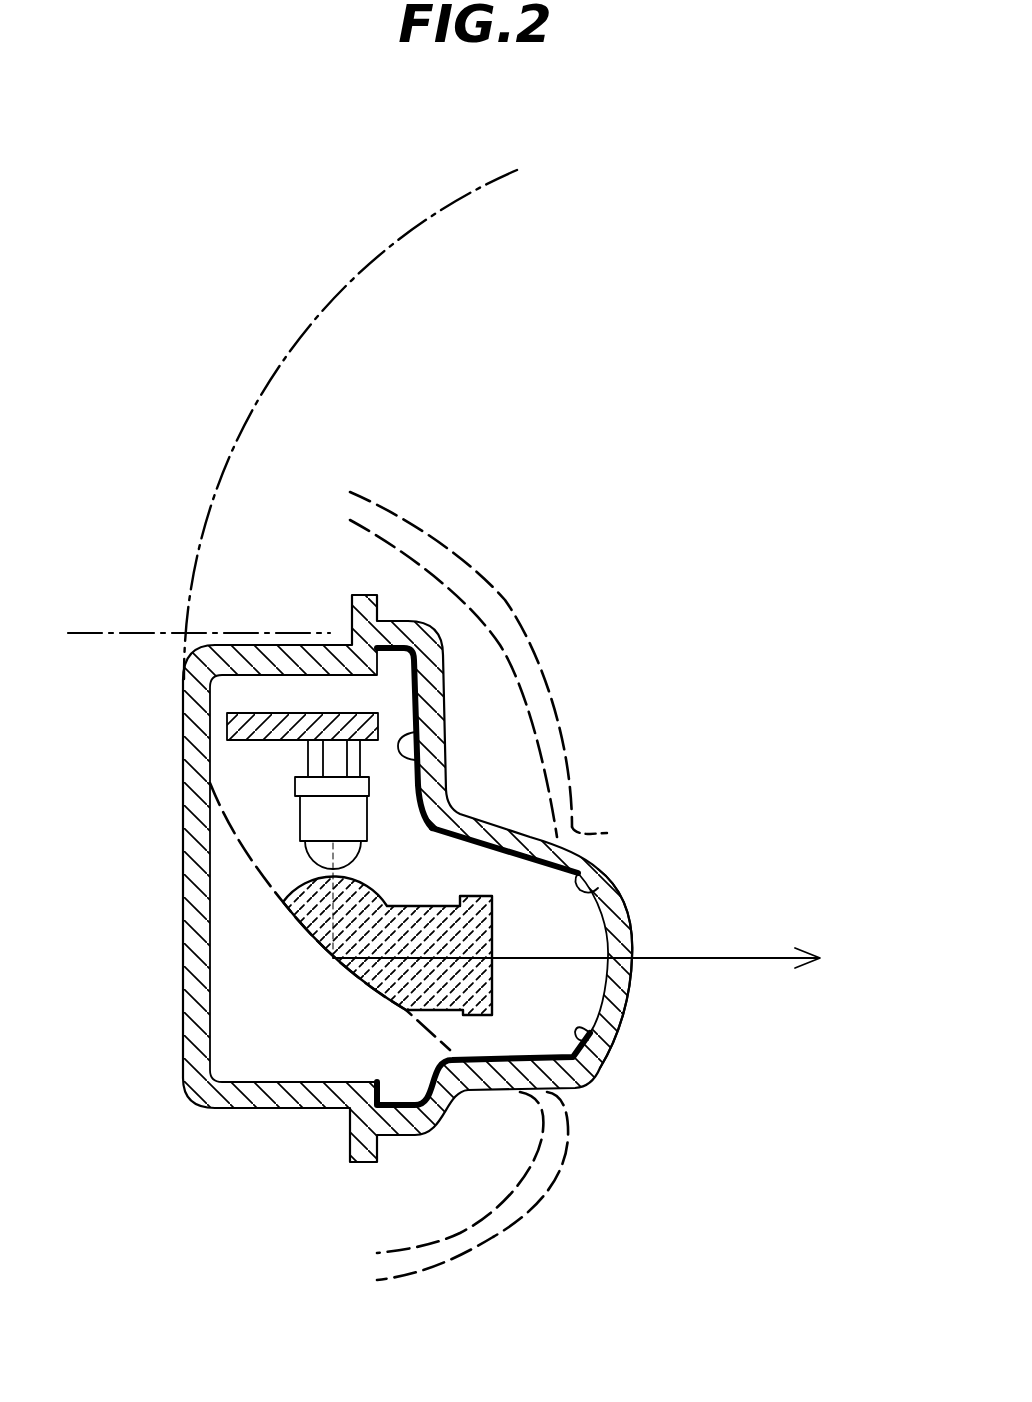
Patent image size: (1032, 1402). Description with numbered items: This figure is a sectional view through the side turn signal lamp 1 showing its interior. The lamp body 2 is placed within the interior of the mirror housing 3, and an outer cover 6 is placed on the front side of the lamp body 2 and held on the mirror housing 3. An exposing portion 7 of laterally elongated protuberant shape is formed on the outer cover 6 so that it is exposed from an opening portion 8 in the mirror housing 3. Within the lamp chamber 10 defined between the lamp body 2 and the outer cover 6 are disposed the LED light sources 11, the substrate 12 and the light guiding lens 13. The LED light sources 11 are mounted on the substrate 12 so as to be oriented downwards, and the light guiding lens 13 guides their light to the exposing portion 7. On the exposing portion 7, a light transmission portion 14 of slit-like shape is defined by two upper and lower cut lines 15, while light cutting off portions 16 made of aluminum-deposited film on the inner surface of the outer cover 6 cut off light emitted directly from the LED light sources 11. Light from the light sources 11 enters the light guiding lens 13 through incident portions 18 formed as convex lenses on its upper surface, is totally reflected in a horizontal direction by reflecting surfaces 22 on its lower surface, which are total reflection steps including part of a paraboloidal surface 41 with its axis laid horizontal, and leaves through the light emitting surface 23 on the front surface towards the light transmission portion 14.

The side turn signal lamp 1 is at (464, 886).
The lamp body 2 is at (183, 912).
The mirror housing 3 is at (488, 582).
The outer cover 6 is at (447, 678).
The exposing portion 7 is at (610, 1068).
The opening portion 8 is at (607, 833).
The lamp chamber 10 is at (237, 990).
The LED light source 11 is at (260, 804).
The substrate 12 is at (308, 713).
The light guiding lens 13 is at (487, 820).
The light transmission portion 14 is at (620, 983).
The cut line 15 is at (628, 885).
The light cutting off portion 16 is at (423, 735).
The incident portion 18 is at (358, 832).
The reflecting surface 22 is at (318, 950).
The light emitting surface 23 is at (495, 920).
The paraboloidal surface 41 is at (290, 343).